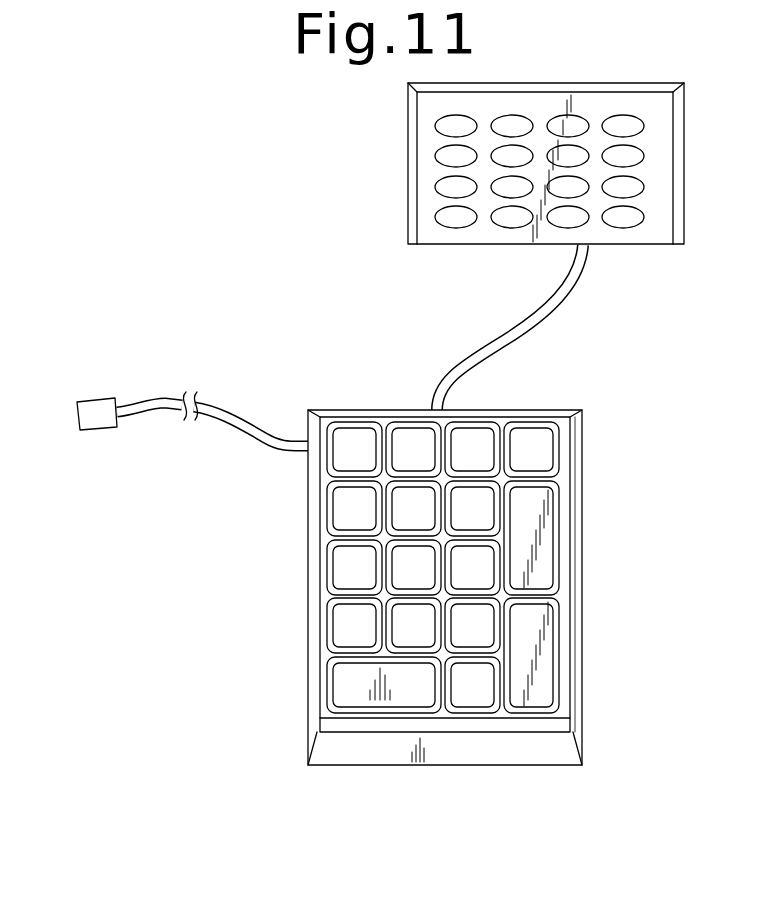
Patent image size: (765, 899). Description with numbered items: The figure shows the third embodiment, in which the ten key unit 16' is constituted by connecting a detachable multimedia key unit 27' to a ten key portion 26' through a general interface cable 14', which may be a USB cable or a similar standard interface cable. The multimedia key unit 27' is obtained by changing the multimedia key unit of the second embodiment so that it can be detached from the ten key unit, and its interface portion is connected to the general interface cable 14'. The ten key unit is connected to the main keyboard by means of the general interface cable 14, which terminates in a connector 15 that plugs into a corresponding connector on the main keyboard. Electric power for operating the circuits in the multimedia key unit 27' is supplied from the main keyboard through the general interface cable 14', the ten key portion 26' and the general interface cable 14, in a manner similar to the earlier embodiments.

The multimedia key unit 27' is at (507, 163).
The general interface cable 14' is at (530, 327).
The general interface cable 14 is at (212, 439).
The connector 15 is at (92, 430).
The ten key portion 26' is at (577, 547).
The ten key unit 16' is at (445, 643).